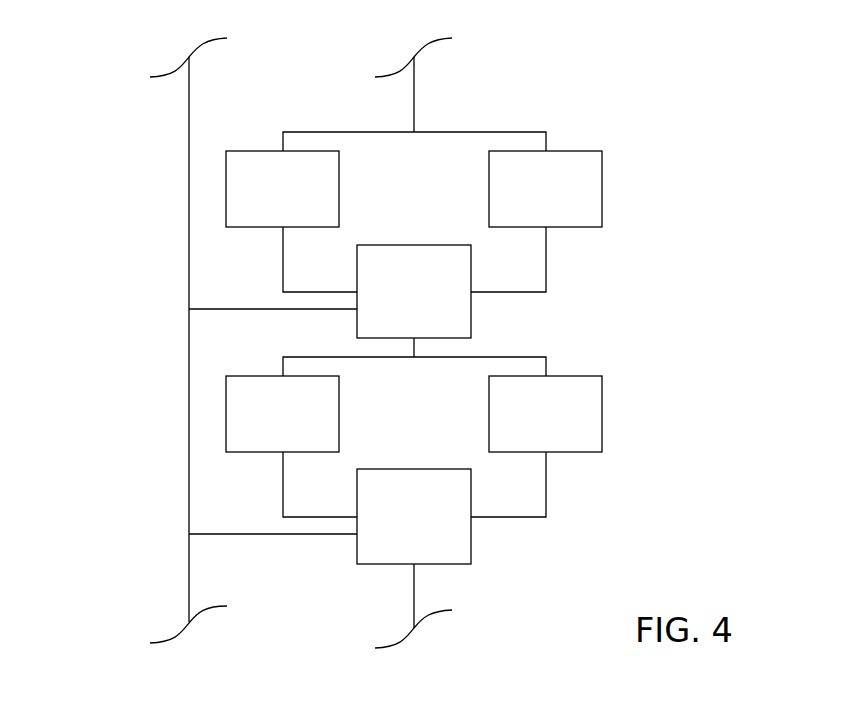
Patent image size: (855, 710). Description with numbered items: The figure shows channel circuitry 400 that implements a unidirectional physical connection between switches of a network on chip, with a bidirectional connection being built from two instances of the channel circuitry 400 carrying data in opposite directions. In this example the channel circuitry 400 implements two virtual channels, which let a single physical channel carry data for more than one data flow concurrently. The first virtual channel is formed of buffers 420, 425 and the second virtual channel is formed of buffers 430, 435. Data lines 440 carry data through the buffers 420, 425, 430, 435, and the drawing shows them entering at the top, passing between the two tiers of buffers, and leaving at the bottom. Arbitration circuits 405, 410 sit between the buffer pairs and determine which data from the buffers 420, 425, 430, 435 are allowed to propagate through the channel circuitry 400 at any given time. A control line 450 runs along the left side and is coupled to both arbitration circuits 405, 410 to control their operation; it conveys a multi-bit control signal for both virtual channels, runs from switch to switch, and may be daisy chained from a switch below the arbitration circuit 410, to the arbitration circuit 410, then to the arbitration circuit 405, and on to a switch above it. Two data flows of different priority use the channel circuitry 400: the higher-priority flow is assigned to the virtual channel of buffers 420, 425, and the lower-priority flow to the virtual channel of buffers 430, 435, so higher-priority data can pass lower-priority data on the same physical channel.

The channel circuitry 400 is at (545, 84).
The arbitration circuit 405 is at (397, 324).
The arbitration circuit 410 is at (397, 550).
The buffer 420 is at (266, 196).
The buffer 425 is at (266, 422).
The buffer 430 is at (529, 196).
The buffer 435 is at (529, 422).
The data lines 440 is at (367, 132).
The control line 450 is at (189, 170).